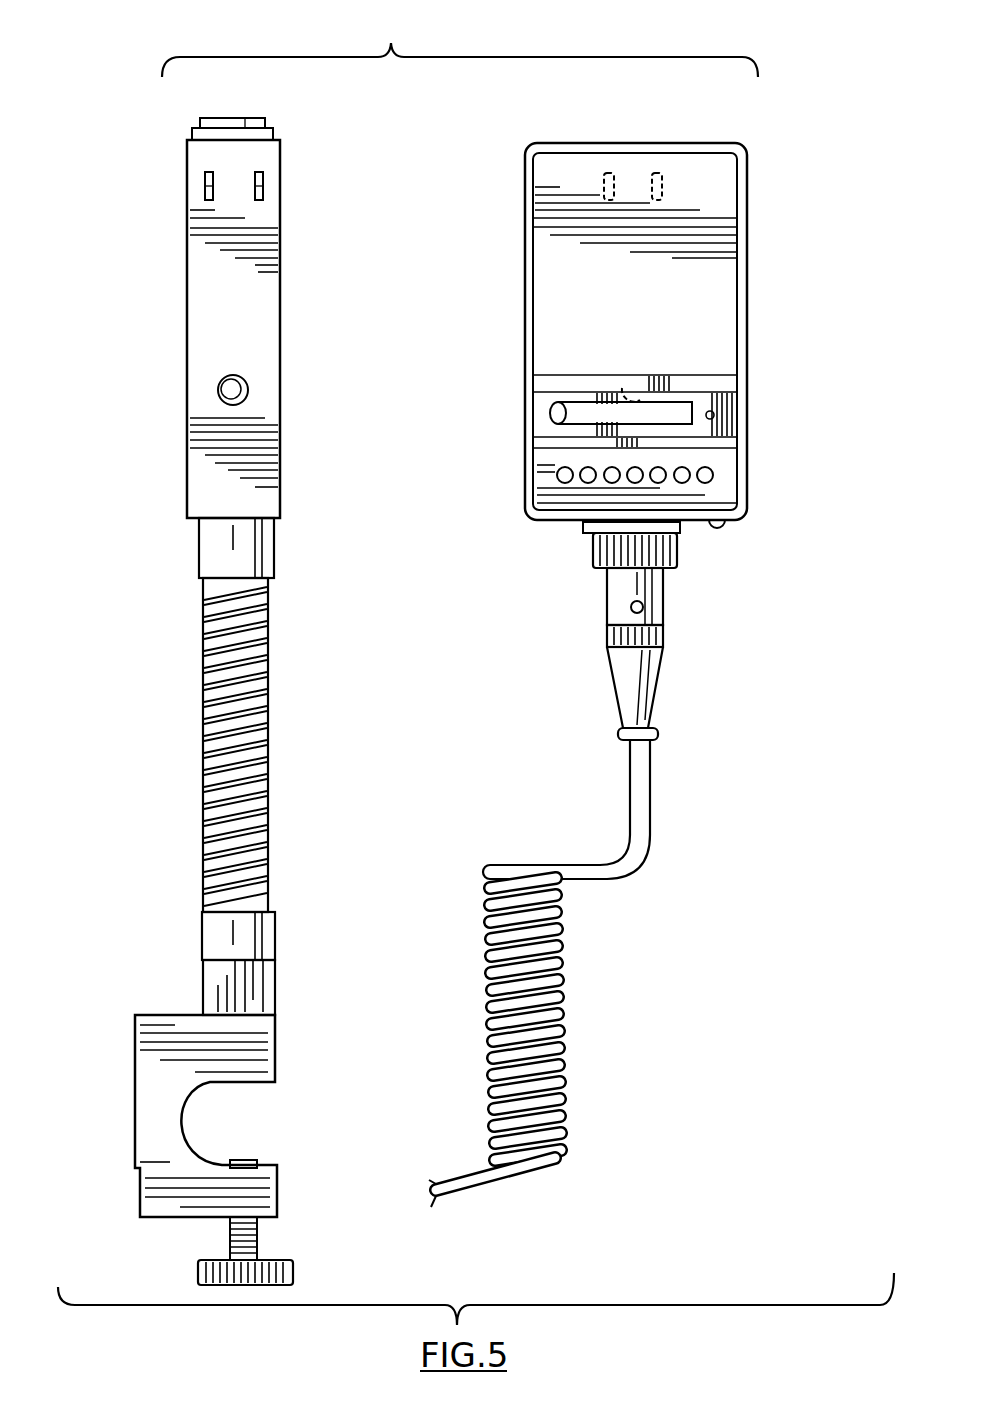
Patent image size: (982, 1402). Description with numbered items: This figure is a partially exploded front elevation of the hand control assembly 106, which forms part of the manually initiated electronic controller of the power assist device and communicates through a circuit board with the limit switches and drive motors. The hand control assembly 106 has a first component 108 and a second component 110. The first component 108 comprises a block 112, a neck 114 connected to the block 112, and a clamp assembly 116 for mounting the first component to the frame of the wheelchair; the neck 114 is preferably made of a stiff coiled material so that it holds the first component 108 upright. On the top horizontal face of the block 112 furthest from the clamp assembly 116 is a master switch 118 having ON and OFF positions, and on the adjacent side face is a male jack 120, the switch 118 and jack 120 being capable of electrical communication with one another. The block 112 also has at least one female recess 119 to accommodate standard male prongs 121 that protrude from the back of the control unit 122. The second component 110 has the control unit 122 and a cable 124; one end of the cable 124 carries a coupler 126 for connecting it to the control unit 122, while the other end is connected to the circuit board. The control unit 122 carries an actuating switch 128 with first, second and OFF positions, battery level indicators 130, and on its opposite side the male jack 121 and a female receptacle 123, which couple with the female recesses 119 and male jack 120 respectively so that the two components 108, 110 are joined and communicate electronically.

The hand control assembly 106 is at (476, 668).
The first component 108 is at (177, 678).
The second component 110 is at (629, 312).
The block 112 is at (187, 342).
The neck 114 is at (203, 706).
The clamp assembly 116 is at (137, 1120).
The master switch 118 is at (263, 104).
The female recess 119 is at (257, 172).
The male jack 120 is at (230, 393).
The male jack 121 is at (657, 170).
The control unit 122 is at (514, 152).
The female receptacle 123 is at (638, 378).
The cable 124 is at (575, 952).
The coupler 126 is at (700, 614).
The actuating switch 128 is at (668, 404).
The battery level indicators 130 is at (713, 475).